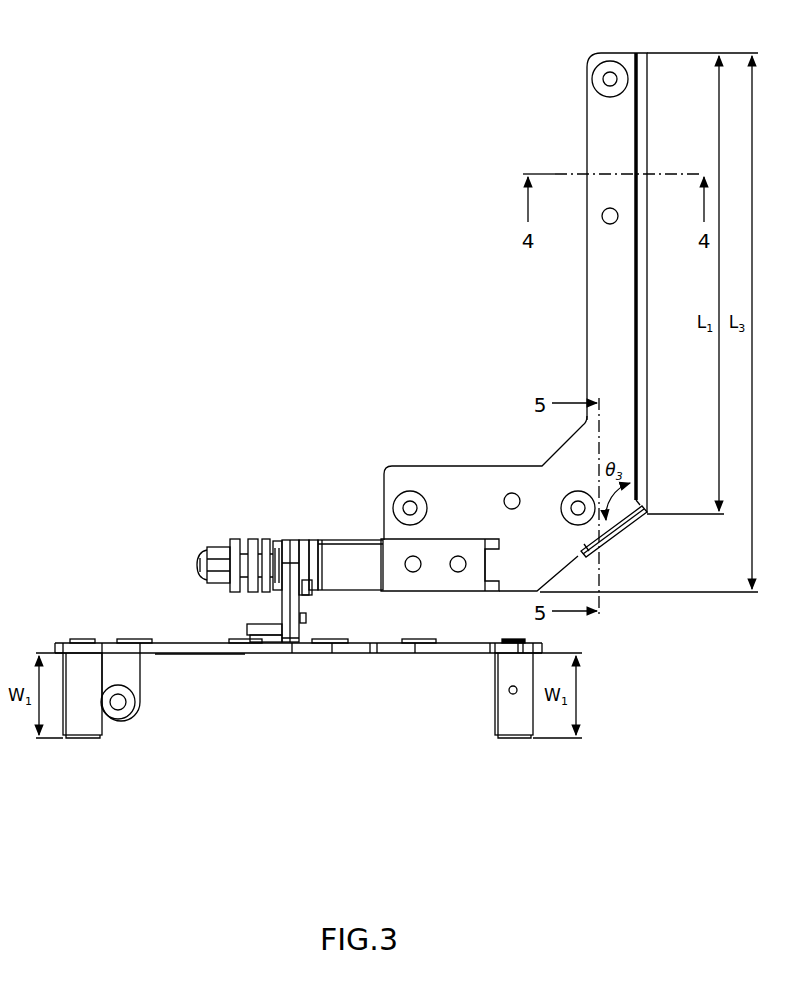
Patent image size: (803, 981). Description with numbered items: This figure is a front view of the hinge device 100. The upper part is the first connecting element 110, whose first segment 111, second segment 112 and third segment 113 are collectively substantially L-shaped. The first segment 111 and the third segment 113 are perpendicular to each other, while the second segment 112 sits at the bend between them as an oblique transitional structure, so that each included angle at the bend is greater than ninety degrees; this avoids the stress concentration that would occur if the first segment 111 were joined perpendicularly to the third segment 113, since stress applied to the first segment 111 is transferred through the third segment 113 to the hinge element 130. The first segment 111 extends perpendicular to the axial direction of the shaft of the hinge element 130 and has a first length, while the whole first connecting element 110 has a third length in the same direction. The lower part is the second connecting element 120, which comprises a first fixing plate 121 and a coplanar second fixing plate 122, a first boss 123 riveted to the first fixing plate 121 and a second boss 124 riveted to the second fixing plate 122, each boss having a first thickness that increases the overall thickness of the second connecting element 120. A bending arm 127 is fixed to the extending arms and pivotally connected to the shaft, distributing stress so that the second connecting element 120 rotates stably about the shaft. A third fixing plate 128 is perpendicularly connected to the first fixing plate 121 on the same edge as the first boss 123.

The hinge device 100 is at (38, 84).
The first connecting element 110 is at (460, 353).
The first segment 111 is at (587, 360).
The second segment 112 is at (577, 453).
The third segment 113 is at (470, 490).
The bending arm 127 is at (328, 592).
The hinge element 130 is at (215, 550).
The second connecting element 120 is at (213, 790).
The first fixing plate 121 is at (220, 650).
The second fixing plate 122 is at (362, 650).
The first boss 123 is at (83, 720).
The second boss 124 is at (510, 720).
The third fixing plate 128 is at (133, 683).